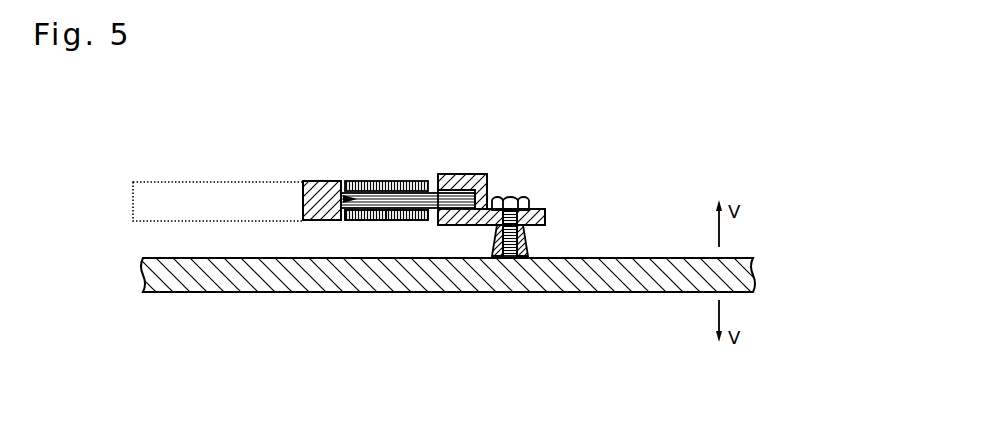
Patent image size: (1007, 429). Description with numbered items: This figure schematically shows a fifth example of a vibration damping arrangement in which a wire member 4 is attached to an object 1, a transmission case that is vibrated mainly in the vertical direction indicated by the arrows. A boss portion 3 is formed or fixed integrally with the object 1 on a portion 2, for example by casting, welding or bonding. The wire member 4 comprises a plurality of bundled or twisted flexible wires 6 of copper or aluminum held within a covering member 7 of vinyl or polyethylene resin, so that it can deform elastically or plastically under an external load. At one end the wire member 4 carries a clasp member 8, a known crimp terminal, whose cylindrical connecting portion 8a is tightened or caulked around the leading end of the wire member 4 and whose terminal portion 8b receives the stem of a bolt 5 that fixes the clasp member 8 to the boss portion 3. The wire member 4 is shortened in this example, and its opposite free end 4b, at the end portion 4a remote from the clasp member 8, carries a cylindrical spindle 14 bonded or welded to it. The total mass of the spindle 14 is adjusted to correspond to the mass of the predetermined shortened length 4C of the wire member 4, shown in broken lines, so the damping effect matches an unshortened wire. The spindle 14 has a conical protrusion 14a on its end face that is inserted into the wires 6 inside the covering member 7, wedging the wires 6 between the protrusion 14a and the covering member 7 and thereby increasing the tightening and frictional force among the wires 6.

The object 1 is at (305, 275).
The portion 2 is at (471, 298).
The boss portion 3 is at (528, 254).
The wire member 4 is at (416, 135).
The end portion of connecting member 4a is at (419, 228).
The free end 4b is at (349, 228).
The predetermined shortened length 4C is at (207, 196).
The bolt 5 is at (510, 198).
The wires 6 is at (431, 181).
The covering member 7 is at (384, 181).
The clasp member 8 is at (488, 166).
The cylindrical connecting portion 8a is at (463, 174).
The terminal portion 8b is at (545, 216).
The spindle 14 is at (318, 182).
The protrusion 14a is at (350, 181).